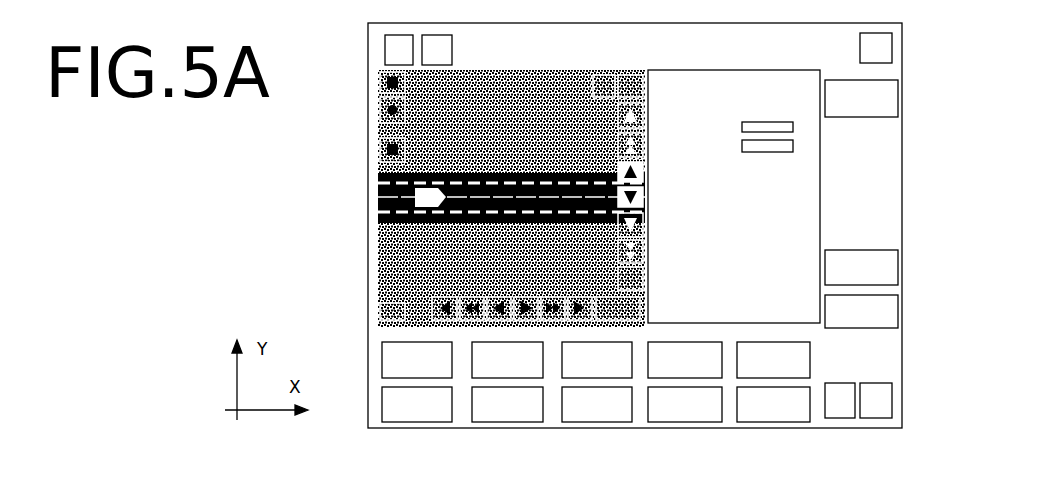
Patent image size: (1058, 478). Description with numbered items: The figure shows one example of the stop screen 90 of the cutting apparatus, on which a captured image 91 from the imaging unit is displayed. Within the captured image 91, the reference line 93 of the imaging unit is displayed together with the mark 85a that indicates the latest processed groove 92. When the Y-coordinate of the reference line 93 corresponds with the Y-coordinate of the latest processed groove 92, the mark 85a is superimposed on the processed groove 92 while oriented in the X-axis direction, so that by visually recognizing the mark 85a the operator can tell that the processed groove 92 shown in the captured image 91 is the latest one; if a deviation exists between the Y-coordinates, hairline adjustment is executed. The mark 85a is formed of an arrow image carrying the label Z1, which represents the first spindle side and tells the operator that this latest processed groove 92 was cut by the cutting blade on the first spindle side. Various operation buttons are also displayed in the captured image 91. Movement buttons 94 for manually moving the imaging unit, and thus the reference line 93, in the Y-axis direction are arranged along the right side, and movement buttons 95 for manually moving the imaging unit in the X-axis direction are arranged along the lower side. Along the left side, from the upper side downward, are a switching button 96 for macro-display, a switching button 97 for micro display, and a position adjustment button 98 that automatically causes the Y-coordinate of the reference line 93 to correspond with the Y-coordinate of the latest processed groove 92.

The stop screen 90 is at (903, 57).
The captured image 91 is at (560, 70).
The mark 85a is at (440, 185).
The processed groove 92 is at (510, 182).
The reference line 93 is at (509, 198).
The movement buttons 94 is at (648, 172).
The movement buttons 95 is at (531, 326).
The switching button for macro-display 96 is at (380, 83).
The switching button for micro display 97 is at (380, 112).
The position adjustment button 98 is at (380, 152).